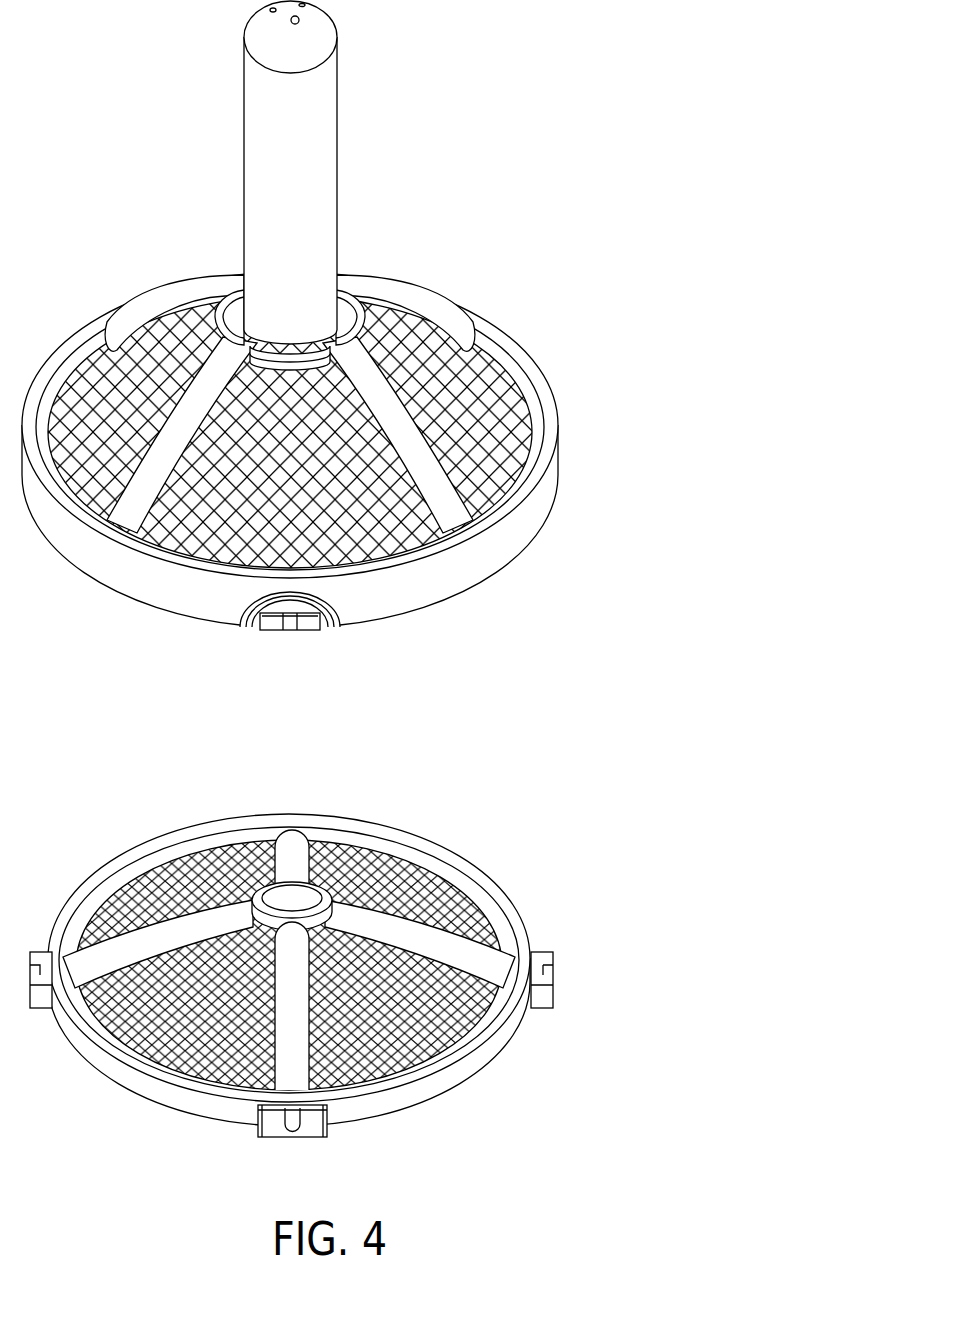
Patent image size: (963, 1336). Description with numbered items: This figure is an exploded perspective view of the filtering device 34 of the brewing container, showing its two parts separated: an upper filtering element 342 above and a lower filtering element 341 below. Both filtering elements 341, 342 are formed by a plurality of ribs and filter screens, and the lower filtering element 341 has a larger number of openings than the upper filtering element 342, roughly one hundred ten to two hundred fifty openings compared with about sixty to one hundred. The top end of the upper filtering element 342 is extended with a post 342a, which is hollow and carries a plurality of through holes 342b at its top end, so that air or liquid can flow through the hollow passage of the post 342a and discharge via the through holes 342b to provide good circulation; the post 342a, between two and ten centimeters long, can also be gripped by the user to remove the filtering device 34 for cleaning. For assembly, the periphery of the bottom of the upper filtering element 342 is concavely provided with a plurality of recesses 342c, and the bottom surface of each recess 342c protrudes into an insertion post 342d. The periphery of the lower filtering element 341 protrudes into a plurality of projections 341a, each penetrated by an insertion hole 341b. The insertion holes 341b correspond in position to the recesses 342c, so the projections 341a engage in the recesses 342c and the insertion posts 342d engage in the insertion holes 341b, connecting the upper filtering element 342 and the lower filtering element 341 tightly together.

The filtering device 34 is at (334, 597).
The lower filtering element 341 is at (291, 991).
The projection 341a is at (315, 1130).
The insertion hole 341b is at (283, 1123).
The upper filtering element 342 is at (323, 354).
The post 342a is at (317, 190).
The through holes 342b is at (299, 19).
The recess 342c is at (320, 630).
The insertion post 342d is at (283, 630).